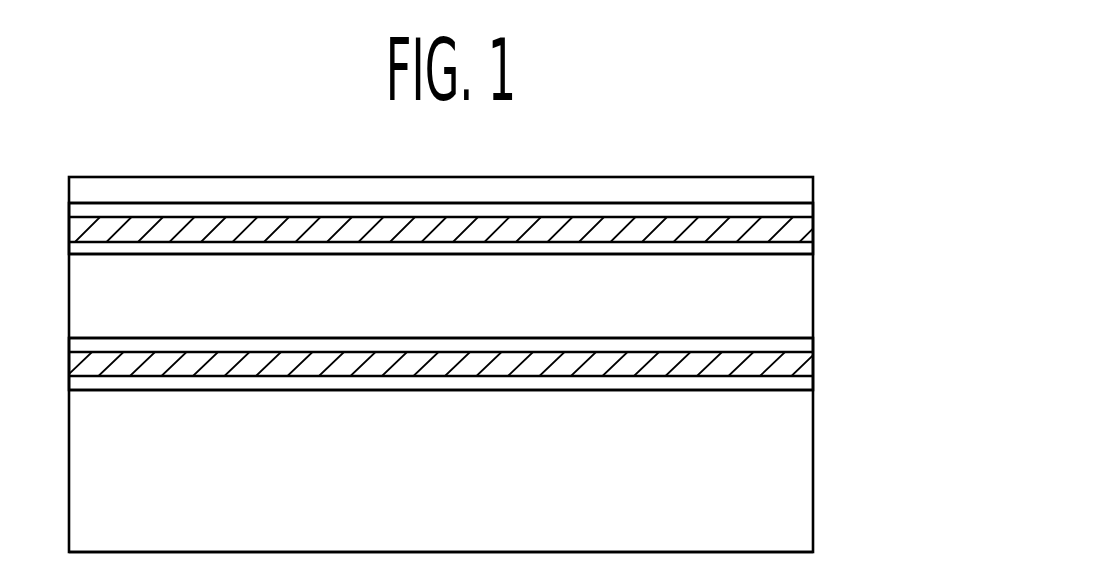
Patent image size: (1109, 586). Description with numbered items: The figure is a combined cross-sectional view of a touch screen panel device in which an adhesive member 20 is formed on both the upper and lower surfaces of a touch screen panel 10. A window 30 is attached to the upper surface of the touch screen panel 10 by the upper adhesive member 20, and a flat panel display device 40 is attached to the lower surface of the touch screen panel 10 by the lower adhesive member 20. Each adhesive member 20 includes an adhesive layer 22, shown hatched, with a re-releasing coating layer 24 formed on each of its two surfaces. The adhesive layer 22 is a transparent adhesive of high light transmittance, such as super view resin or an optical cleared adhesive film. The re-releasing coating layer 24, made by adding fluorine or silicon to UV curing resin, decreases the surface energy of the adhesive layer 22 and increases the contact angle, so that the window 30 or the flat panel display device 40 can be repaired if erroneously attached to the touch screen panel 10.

The touch screen panel 10 is at (800, 313).
The adhesive member 20 is at (925, 177).
The adhesive layer 22 is at (799, 238).
The re-releasing coating layer 24 is at (798, 211).
The window 30 is at (798, 189).
The flat panel display device 40 is at (795, 496).